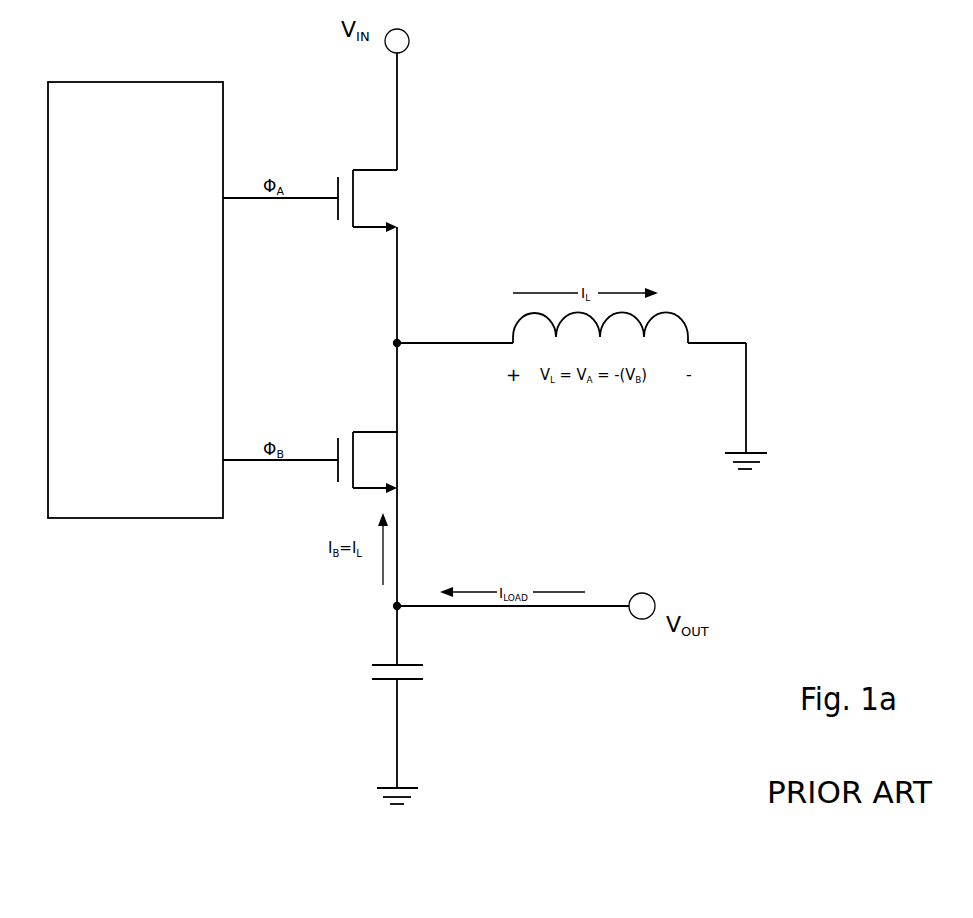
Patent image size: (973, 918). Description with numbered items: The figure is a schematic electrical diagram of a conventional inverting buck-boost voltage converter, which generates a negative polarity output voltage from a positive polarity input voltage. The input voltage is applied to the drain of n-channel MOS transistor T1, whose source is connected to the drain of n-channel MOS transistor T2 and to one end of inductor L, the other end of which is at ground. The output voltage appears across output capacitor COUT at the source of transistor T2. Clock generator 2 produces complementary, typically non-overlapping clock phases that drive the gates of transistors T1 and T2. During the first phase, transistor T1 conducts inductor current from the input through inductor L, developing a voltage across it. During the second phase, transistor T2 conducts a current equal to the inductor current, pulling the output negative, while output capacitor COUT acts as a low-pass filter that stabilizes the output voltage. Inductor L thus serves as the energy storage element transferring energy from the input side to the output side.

The clock generator 2 is at (128, 360).
The n-channel MOS transistor T1 is at (422, 190).
The n-channel MOS transistor T2 is at (414, 452).
The inductor L is at (646, 305).
The output capacitor COUT is at (458, 705).